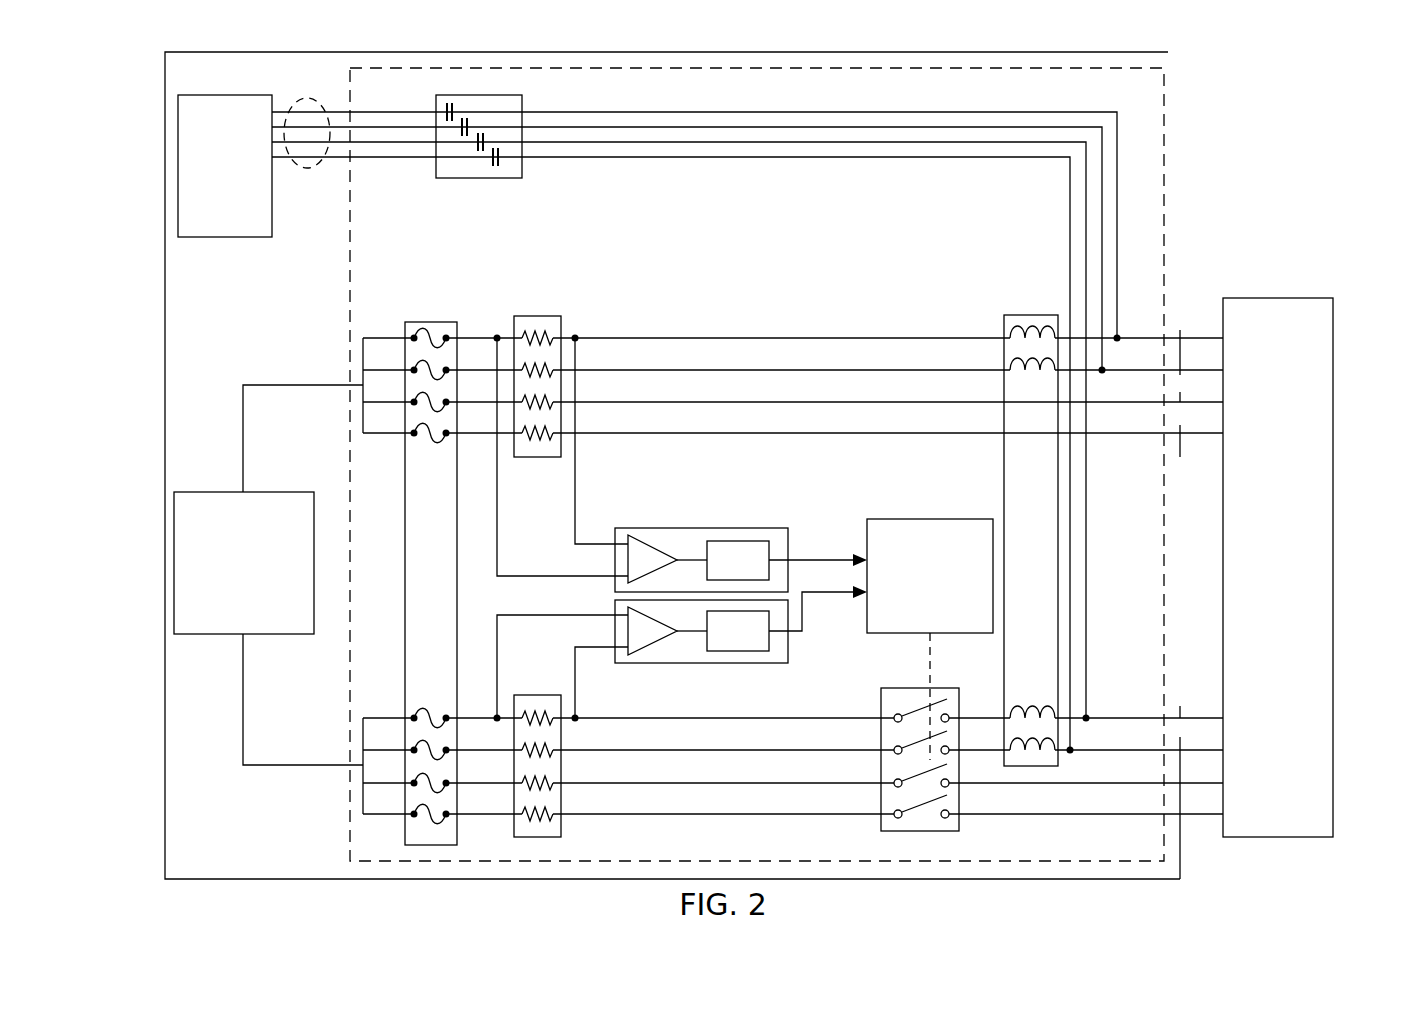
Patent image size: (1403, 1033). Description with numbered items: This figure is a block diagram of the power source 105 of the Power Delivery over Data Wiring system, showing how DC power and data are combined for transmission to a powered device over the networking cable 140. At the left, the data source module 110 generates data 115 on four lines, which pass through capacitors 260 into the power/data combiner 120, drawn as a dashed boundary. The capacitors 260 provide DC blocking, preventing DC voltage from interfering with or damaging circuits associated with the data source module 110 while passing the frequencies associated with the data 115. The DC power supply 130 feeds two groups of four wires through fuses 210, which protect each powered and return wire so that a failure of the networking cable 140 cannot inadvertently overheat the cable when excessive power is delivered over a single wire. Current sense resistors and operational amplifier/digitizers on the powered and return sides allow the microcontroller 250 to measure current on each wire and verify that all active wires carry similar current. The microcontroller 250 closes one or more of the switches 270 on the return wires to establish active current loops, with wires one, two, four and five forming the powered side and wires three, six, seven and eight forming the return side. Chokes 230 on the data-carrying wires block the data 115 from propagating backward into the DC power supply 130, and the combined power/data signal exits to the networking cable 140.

The power source 105 is at (207, 79).
The data source module 110 is at (209, 225).
The data 115 is at (307, 170).
The power/data combiner 120 is at (1156, 96).
The DC power supply 130 is at (228, 611).
The networking cable 140 is at (1262, 590).
The fuses 210 is at (443, 320).
The chokes 230 is at (1004, 323).
The microcontroller 250 is at (914, 625).
The capacitors 260 is at (493, 178).
The switch 270 is at (880, 703).